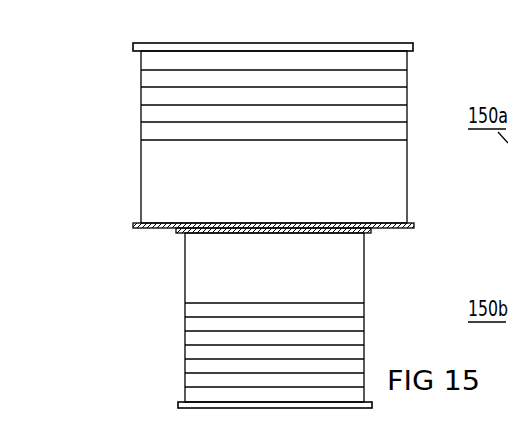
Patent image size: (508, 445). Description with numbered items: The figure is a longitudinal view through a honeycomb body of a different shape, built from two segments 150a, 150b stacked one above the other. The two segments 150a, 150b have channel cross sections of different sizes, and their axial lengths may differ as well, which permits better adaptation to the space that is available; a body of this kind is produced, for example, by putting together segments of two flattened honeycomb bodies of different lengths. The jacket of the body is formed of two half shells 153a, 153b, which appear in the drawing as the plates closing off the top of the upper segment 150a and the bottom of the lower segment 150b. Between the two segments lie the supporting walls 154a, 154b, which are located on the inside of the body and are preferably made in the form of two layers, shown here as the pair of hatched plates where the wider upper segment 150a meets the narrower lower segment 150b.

The segment 150a is at (158, 181).
The segment 150b is at (196, 328).
The half shell 153a is at (189, 47).
The half shell 153b is at (178, 403).
The supporting wall 154a is at (137, 229).
The supporting wall 154b is at (369, 232).